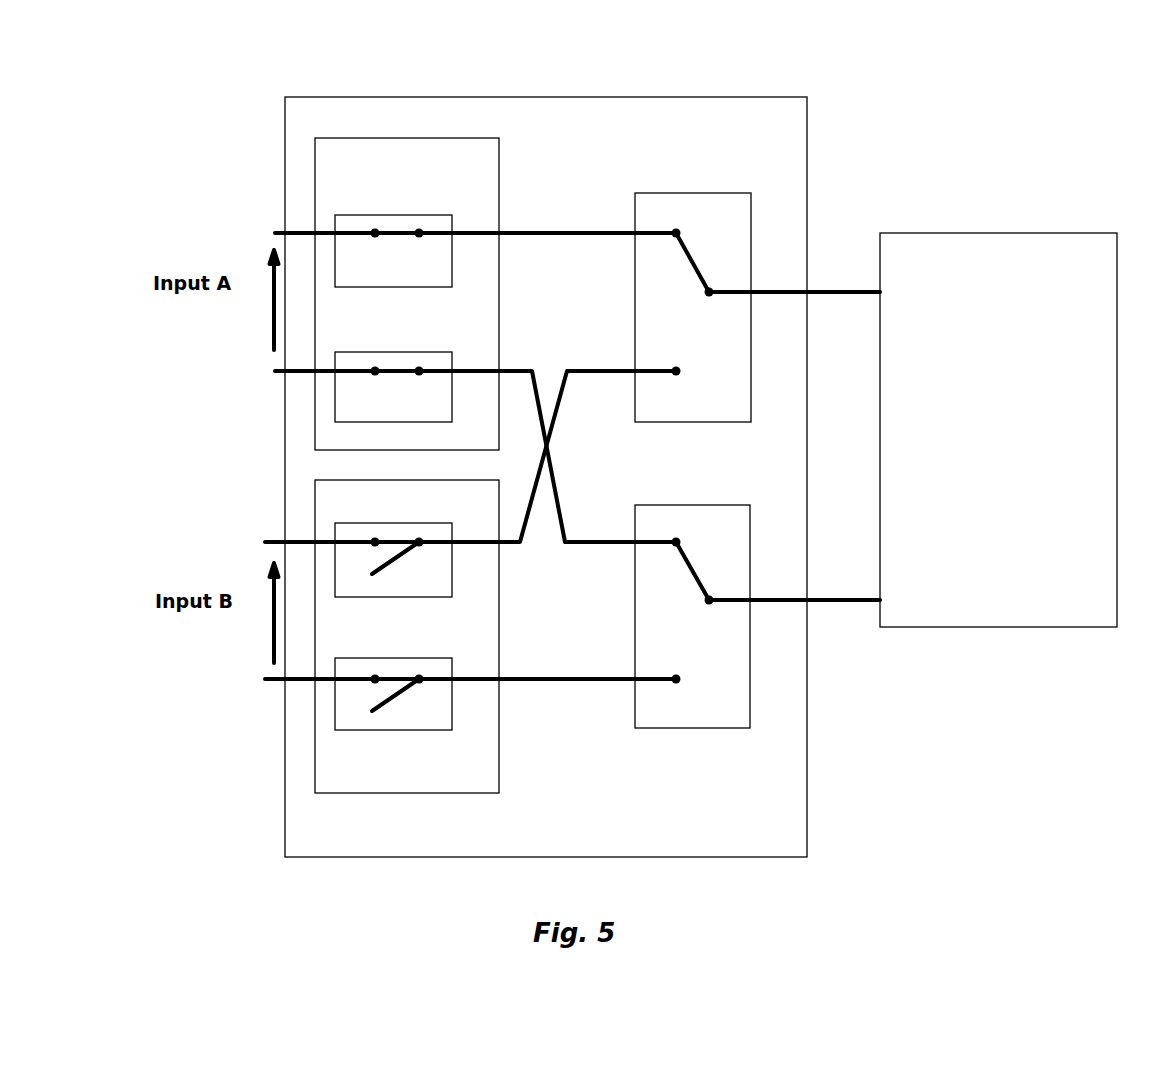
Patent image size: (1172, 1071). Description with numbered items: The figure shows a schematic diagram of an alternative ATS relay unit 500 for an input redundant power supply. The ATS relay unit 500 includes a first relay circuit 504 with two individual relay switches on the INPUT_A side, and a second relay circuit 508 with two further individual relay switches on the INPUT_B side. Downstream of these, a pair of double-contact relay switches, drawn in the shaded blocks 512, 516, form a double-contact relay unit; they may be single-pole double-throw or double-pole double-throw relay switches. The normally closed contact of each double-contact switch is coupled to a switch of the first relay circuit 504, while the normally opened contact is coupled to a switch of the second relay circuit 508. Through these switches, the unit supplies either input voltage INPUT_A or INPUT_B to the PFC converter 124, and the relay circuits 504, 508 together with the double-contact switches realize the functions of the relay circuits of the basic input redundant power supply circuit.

The ATS relay unit 500 is at (823, 799).
The relay circuit 504 is at (301, 204).
The relay circuit 508 is at (291, 518).
The switch S5 512 is at (765, 206).
The switch S6 516 is at (762, 653).
The power factor correction (PFC) converter 124 is at (998, 419).